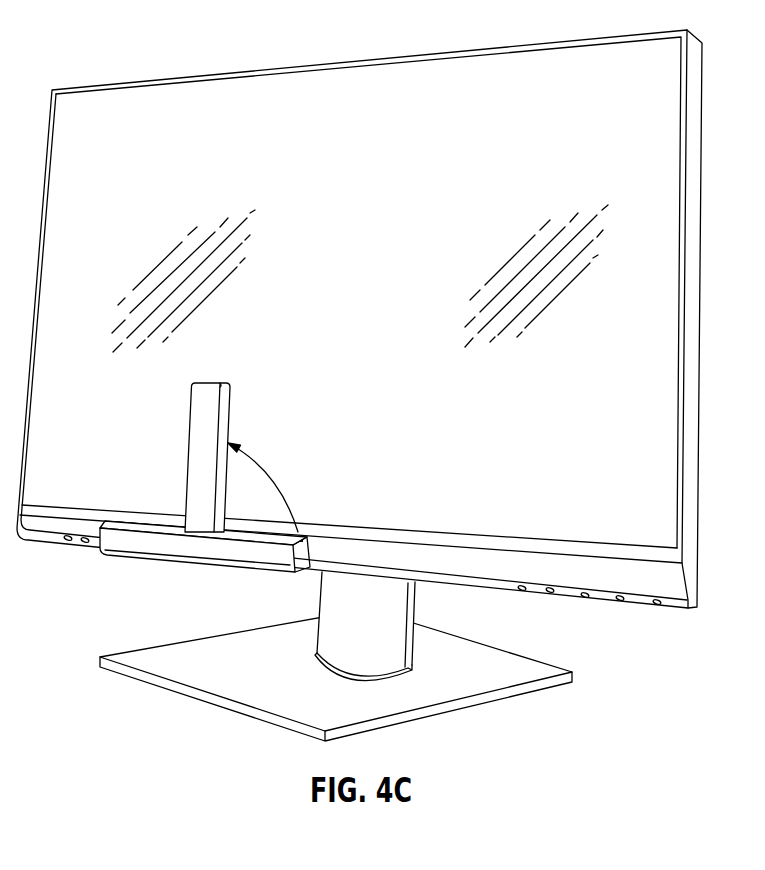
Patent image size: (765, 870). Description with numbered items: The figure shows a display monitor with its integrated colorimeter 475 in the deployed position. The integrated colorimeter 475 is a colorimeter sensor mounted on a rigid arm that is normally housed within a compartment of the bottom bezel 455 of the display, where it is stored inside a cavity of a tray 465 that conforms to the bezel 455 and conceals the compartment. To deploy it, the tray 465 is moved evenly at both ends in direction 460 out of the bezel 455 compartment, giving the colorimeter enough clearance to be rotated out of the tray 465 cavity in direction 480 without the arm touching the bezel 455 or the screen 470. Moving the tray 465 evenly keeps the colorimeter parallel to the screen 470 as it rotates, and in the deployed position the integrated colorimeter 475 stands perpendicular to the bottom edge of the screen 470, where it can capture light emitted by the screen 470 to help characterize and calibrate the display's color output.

The bottom bezel 455 is at (638, 608).
The direction 460 is at (152, 543).
The tray 465 is at (220, 558).
The screen 470 is at (397, 235).
The integrated colorimeter 475 is at (188, 460).
The direction 480 is at (270, 476).